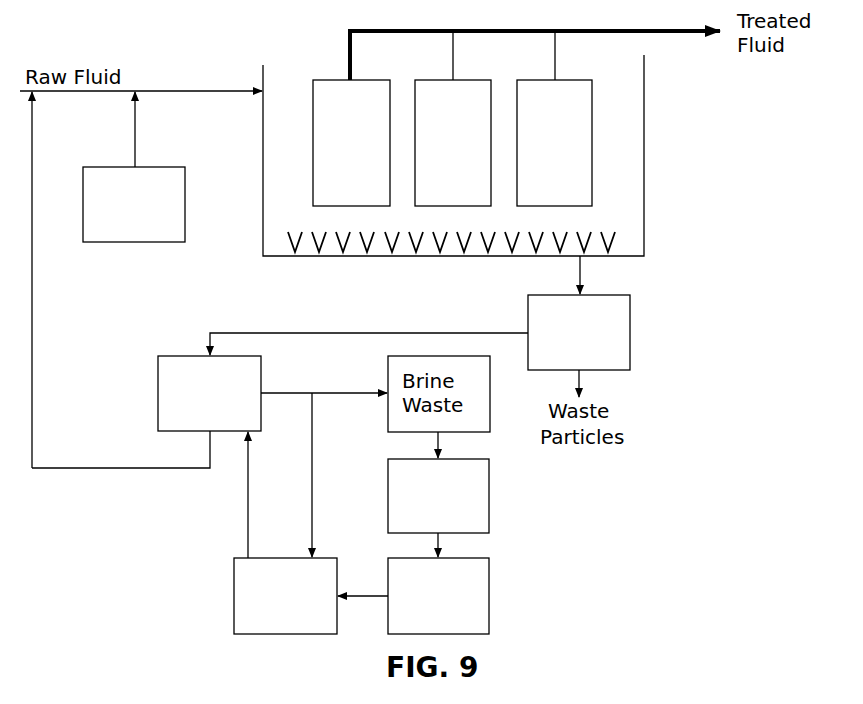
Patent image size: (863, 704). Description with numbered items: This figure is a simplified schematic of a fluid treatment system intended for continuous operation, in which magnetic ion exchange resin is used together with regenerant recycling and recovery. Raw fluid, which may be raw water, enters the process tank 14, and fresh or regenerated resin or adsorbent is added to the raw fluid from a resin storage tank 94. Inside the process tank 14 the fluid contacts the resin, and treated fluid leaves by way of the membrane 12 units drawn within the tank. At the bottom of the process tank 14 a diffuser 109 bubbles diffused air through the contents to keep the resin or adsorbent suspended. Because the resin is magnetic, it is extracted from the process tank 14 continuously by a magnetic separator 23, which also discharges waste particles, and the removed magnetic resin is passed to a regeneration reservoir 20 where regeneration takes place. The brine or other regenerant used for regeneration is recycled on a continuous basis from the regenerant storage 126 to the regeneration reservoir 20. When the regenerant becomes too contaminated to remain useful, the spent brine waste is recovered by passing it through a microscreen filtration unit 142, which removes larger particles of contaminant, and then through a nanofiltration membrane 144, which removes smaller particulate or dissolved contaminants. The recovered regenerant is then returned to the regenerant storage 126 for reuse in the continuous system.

The membrane 12 is at (516, 118).
The process tank 14 is at (290, 130).
The regeneration reservoir 20 is at (343, 382).
The magnetic separator 23 is at (579, 326).
The resin storage tank 94 is at (134, 167).
The diffuser 109 is at (282, 248).
The regenerant storage 126 is at (285, 533).
The microscreen filtration unit 142 is at (438, 508).
The nanofiltration membrane 144 is at (413, 596).